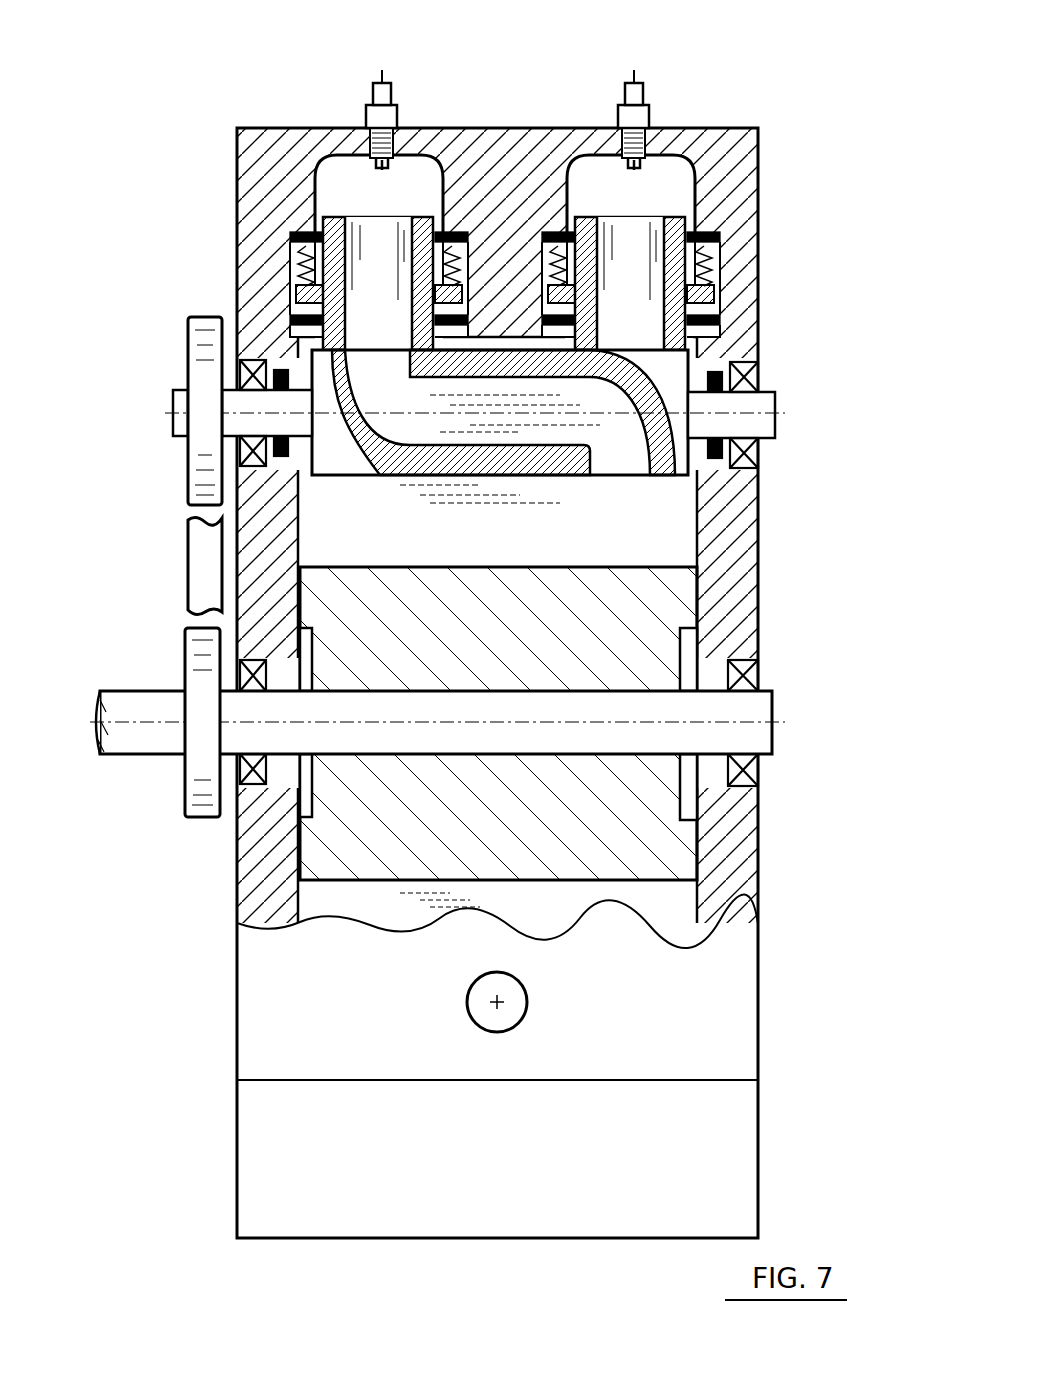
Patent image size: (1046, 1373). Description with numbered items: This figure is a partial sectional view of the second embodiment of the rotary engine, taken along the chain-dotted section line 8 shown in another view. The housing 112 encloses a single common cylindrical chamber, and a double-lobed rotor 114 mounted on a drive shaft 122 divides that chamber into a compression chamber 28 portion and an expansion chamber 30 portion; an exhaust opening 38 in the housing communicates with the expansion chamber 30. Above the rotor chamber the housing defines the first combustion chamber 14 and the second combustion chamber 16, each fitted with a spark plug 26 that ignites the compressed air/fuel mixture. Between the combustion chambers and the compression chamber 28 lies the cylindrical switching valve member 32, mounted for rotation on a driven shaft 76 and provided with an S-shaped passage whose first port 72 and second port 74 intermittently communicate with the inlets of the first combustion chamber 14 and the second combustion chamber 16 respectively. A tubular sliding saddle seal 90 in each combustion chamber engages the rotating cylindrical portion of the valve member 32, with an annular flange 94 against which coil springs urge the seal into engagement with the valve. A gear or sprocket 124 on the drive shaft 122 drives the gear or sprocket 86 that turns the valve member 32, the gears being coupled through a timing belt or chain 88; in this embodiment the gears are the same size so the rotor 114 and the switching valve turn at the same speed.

The section line 8- 8 is at (632, 402).
The first combustion chamber 14 is at (413, 187).
The second combustion chamber 16 is at (752, 129).
The spark plug 26 is at (394, 93).
The compression chamber 28 is at (480, 385).
The expansion chamber 30 is at (658, 903).
The switching valve member 32 is at (672, 382).
The exhaust opening 38 is at (520, 1012).
The first port 72 is at (367, 362).
The second port 74 is at (640, 460).
The driven shaft 76 is at (763, 404).
The gear or sprocket 86 is at (205, 340).
The timing belt or chain 88 is at (203, 553).
The saddle seal 90 is at (425, 363).
The annular flange 94 is at (706, 305).
The housing 112 is at (760, 612).
The double-lobed rotor 114 is at (653, 838).
The drive shaft 122 is at (160, 706).
The gear or sprocket 124 is at (200, 784).